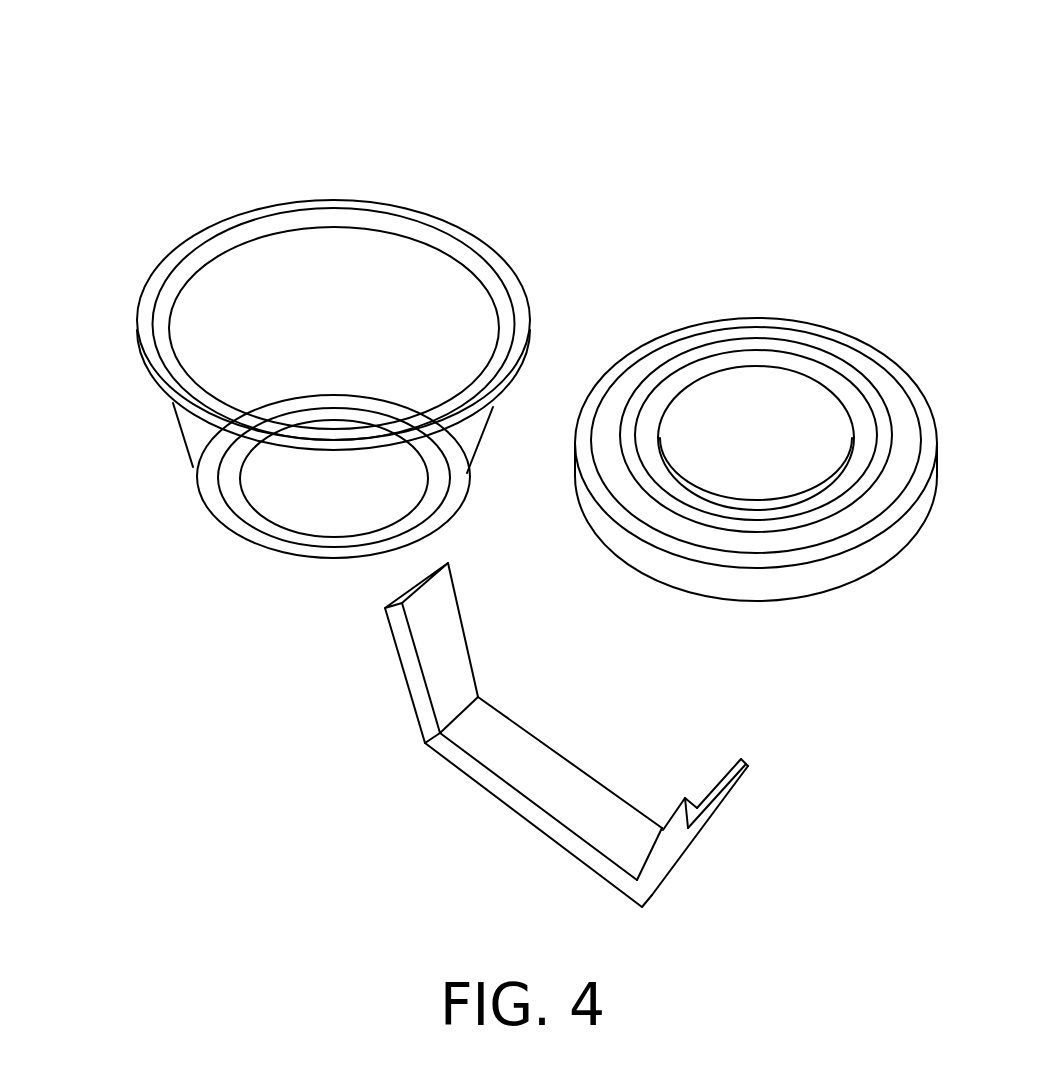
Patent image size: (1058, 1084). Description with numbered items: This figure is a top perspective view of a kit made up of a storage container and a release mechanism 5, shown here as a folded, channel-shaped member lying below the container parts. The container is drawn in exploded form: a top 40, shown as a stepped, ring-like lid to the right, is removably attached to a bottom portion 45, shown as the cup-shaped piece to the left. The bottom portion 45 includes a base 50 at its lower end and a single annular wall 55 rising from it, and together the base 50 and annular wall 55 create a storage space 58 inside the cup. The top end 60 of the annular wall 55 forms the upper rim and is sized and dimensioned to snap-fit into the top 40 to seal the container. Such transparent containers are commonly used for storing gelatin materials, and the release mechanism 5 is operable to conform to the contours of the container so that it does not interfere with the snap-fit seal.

The release mechanism 5 is at (784, 832).
The top 40 is at (892, 320).
The bottom portion 45 is at (285, 286).
The base 50 is at (222, 508).
The annular wall 55 is at (378, 253).
The storage space 58 is at (341, 302).
The top end 60 is at (207, 237).